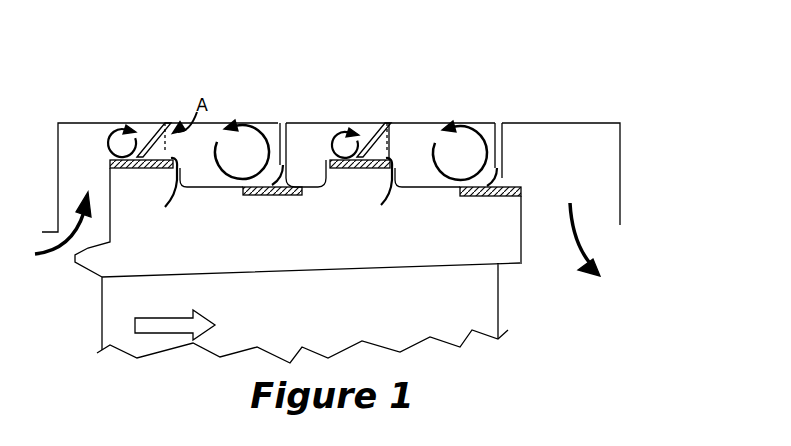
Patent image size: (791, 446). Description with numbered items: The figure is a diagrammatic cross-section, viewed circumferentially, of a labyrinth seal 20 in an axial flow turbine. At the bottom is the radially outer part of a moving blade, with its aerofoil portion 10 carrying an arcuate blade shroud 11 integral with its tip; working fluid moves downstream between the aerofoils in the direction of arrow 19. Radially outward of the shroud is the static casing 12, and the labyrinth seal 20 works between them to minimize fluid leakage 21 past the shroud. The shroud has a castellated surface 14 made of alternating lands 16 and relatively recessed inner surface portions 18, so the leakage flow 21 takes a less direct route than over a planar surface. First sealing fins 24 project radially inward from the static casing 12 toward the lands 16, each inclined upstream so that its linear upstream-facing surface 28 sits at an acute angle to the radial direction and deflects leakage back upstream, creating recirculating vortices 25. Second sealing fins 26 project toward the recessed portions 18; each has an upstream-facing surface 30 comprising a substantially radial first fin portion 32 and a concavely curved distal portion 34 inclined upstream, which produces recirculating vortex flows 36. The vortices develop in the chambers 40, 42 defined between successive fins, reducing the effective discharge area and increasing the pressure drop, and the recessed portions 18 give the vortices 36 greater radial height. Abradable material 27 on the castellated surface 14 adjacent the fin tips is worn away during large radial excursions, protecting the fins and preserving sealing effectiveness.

The aerofoil portion 10 is at (309, 318).
The blade shroud 11 is at (313, 260).
The static casing 12 is at (323, 28).
The castellated surface 14 is at (416, 165).
The land 16 is at (165, 207).
The recessed radially inner surface portion 18 is at (195, 189).
The arrow 19 is at (175, 317).
The labyrinth seal 20 is at (570, 157).
The fluid leakage 21 is at (318, 234).
The first sealing fin 24 is at (168, 121).
The recirculating vortex 25 is at (233, 141).
The second sealing fin 26 is at (279, 120).
The abradable material 27 is at (129, 170).
The upstream-facing surface 28 is at (156, 126).
The upstream-facing surface 30 is at (271, 132).
The first fin portion 32 is at (290, 142).
The distal portion 34 is at (285, 195).
The recirculating vortex flow 36 is at (351, 150).
The chamber 40 is at (184, 157).
The chamber 42 is at (294, 157).